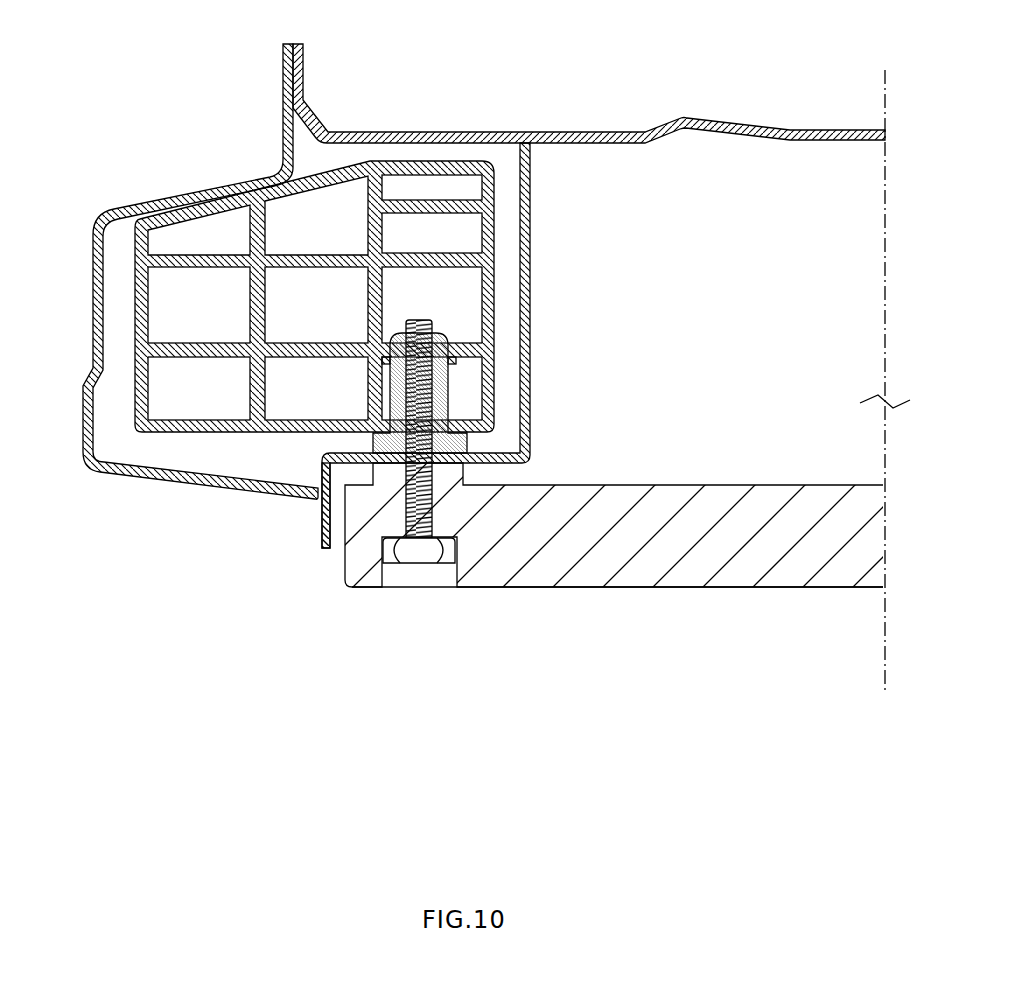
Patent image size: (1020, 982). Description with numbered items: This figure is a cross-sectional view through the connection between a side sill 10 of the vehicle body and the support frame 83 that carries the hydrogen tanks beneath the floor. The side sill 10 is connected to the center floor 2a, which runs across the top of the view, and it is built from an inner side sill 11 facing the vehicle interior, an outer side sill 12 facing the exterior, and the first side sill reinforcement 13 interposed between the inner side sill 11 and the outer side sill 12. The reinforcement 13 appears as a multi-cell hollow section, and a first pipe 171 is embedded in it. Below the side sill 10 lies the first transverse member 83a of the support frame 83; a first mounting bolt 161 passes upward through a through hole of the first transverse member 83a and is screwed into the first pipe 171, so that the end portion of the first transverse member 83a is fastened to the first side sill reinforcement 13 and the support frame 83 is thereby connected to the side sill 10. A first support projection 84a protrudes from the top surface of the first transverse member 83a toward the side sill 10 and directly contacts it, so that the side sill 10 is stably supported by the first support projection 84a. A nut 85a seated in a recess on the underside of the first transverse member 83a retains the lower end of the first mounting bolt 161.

The side sill 10 is at (176, 290).
The inner side sill 11 is at (531, 285).
The outer side sill 12 is at (93, 327).
The first side sill reinforcement 13 is at (433, 170).
The center floor 2a is at (805, 130).
The first mounting bolt 161 is at (443, 392).
The first pipe 171 is at (442, 375).
The support frame 83 is at (746, 600).
The first transverse member 83a is at (554, 588).
The first support projection 84a is at (383, 472).
The nut 85a is at (437, 560).